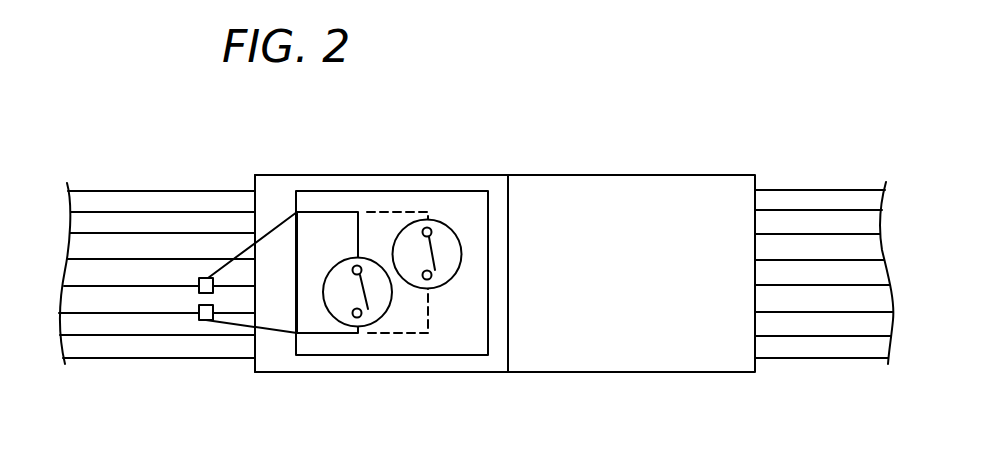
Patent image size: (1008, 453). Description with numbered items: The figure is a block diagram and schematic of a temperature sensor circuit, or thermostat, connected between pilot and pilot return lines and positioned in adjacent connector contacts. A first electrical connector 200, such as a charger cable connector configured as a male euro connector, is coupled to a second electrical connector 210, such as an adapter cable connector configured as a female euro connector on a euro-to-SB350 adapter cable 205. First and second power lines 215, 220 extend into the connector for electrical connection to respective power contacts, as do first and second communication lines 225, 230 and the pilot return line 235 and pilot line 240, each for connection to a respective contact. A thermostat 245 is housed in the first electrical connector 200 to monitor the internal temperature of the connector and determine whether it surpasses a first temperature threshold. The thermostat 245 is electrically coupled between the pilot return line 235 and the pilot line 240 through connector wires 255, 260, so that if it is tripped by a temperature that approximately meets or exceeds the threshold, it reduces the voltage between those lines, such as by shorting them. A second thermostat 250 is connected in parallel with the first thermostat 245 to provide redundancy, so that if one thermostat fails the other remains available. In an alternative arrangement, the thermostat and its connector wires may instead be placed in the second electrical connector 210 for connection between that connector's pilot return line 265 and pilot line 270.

The first electrical connector 200 is at (383, 172).
The euro-to-SB350 adapter cable 205 is at (824, 275).
The second electrical connector 210 is at (632, 174).
The first power line 215 is at (85, 197).
The second power line 220 is at (87, 347).
The first communication line 225 is at (158, 233).
The second communication line 230 is at (103, 260).
The pilot return line 235 is at (118, 287).
The pilot line 240 is at (173, 313).
The thermostat 245 is at (378, 321).
The second thermostat 250 is at (449, 222).
The connector wire 255 is at (282, 222).
The connector wire 260 is at (270, 333).
The pilot return line 265 is at (864, 287).
The pilot line 270 is at (808, 313).